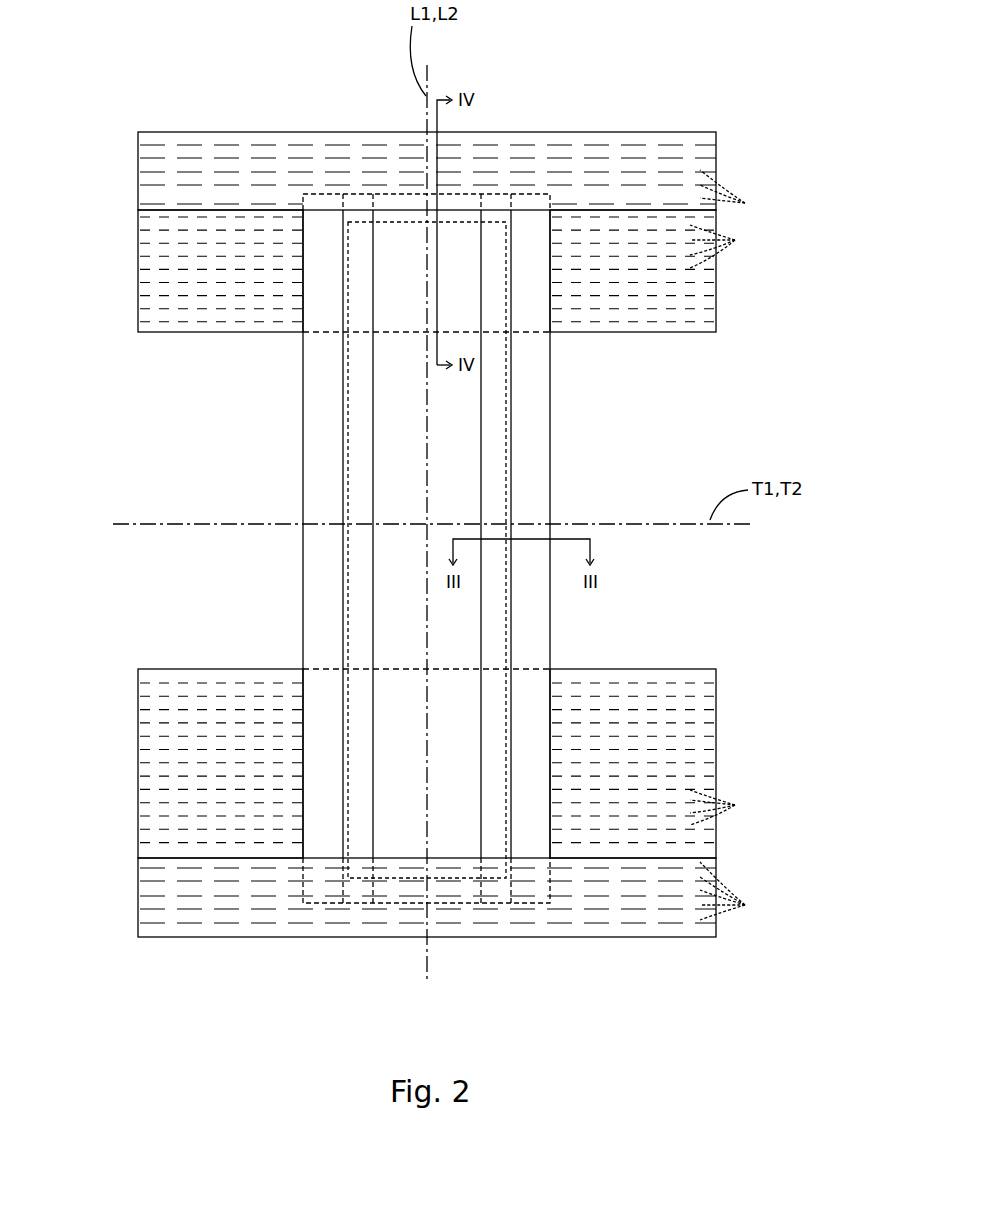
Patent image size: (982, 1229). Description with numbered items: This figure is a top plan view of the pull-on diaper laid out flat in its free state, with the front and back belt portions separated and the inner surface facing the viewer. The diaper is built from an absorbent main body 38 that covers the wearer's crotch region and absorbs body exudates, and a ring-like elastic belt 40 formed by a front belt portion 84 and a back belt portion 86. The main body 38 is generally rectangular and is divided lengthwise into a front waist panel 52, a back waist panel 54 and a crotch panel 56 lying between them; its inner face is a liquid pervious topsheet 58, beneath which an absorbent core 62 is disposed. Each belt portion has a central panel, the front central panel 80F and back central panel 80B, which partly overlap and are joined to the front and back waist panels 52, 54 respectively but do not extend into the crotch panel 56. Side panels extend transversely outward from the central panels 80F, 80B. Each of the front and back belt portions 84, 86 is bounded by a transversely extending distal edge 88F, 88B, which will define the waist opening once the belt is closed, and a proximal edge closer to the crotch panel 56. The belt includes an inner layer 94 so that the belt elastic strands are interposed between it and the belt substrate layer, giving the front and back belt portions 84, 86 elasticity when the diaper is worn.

The absorbent main body 38 is at (552, 415).
The ring-like elastic belt 40 is at (672, 958).
The front waist panel 52 is at (300, 313).
The back waist panel 54 is at (300, 690).
The crotch panel 56 is at (303, 602).
The liquid pervious topsheet 58 is at (458, 521).
The absorbent core 62 is at (345, 467).
The front central panel 80F is at (480, 156).
The back central panel 80B is at (413, 943).
The front belt portion 84 is at (666, 128).
The back belt portion 86 is at (203, 940).
The front distal edge 88F is at (595, 135).
The back distal edge 88B is at (244, 940).
The inner layer 94 is at (170, 272).